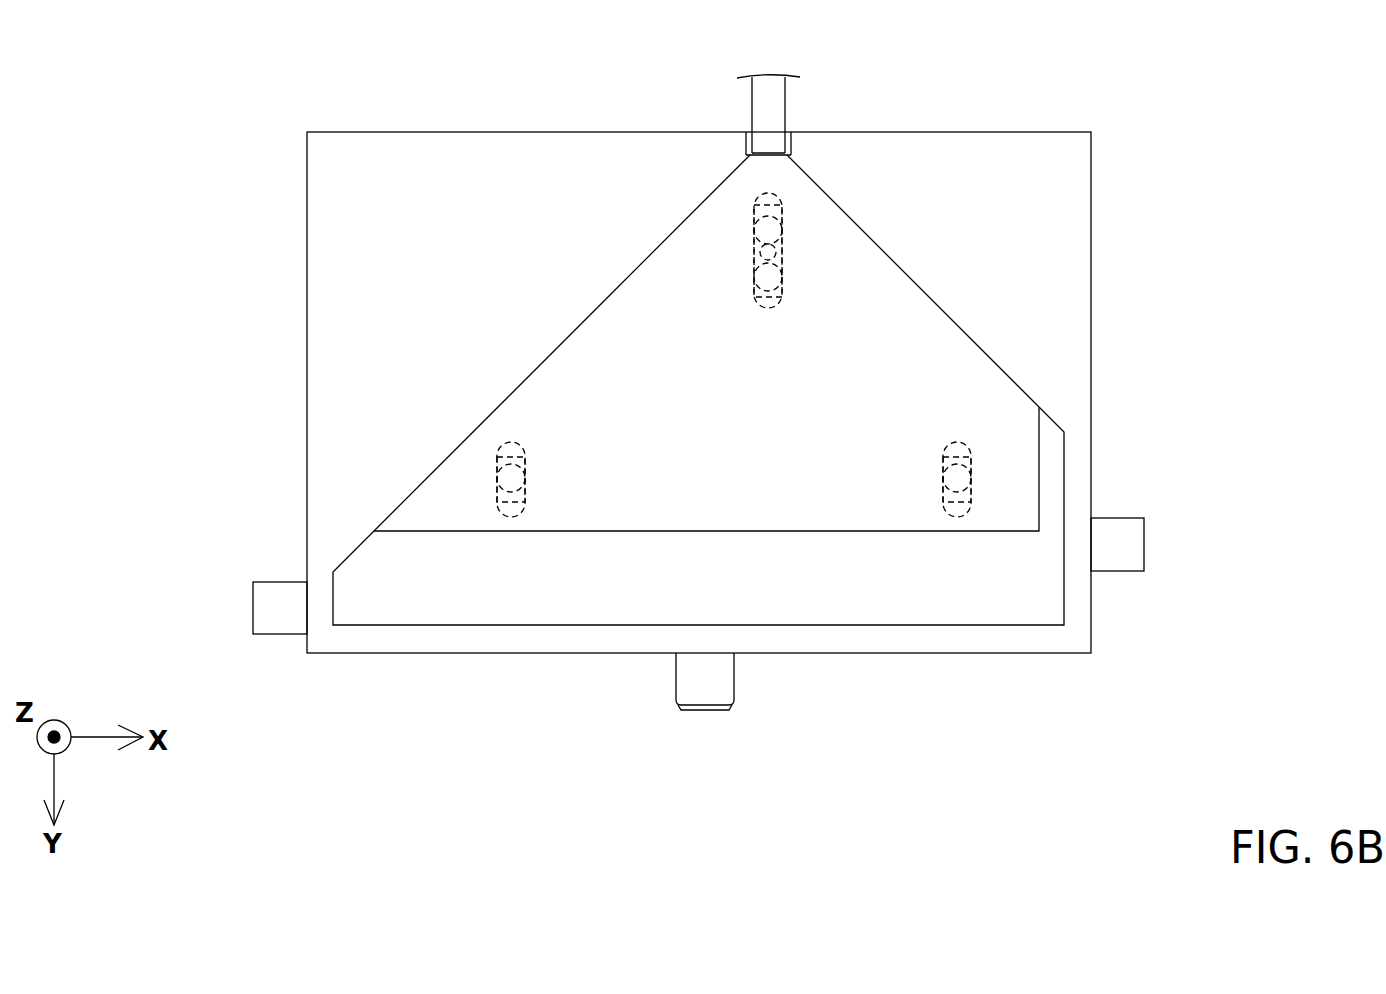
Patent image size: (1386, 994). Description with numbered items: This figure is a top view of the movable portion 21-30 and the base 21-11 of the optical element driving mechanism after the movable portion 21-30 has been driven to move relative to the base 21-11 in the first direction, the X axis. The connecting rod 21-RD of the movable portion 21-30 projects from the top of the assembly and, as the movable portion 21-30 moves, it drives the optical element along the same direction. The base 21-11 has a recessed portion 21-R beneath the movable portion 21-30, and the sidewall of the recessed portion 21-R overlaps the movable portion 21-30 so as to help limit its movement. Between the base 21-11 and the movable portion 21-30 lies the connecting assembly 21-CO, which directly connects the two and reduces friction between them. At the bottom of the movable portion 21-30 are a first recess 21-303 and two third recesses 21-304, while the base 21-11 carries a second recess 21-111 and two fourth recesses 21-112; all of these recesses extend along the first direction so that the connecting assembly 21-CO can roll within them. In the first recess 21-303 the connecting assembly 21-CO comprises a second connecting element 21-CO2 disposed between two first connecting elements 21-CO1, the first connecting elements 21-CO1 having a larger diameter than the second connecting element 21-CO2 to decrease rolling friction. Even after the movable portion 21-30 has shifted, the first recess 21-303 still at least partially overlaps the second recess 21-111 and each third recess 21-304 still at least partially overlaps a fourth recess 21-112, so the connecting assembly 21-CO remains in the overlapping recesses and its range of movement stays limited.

The base 21-11 is at (990, 175).
The connecting rod 21-RD is at (768, 107).
The movable portion 21-30 is at (825, 375).
The recessed portion 21-R is at (913, 597).
The first recess 21-303 is at (754, 207).
The third recess 21-304 is at (500, 455).
The second recess 21-111 is at (780, 305).
The fourth recess 21-112 is at (500, 512).
The first connecting element 21-CO1 is at (778, 232).
The second connecting element 21-CO2 is at (776, 254).
The connecting assembly 21-CO is at (118, 222).